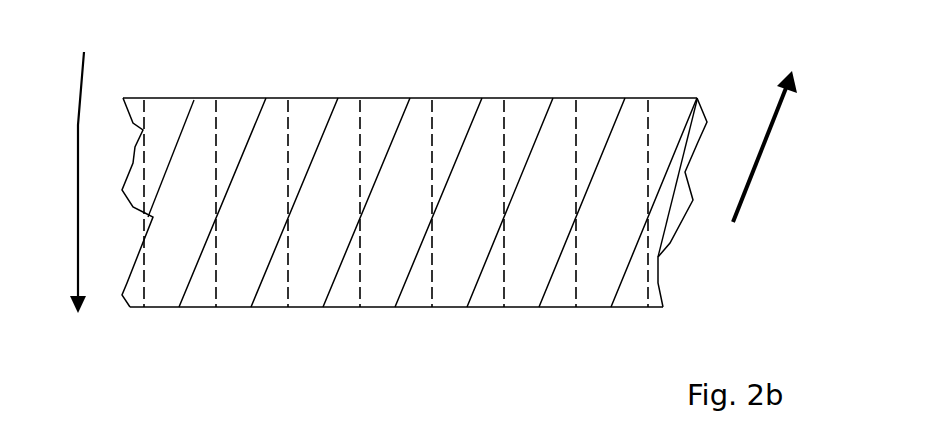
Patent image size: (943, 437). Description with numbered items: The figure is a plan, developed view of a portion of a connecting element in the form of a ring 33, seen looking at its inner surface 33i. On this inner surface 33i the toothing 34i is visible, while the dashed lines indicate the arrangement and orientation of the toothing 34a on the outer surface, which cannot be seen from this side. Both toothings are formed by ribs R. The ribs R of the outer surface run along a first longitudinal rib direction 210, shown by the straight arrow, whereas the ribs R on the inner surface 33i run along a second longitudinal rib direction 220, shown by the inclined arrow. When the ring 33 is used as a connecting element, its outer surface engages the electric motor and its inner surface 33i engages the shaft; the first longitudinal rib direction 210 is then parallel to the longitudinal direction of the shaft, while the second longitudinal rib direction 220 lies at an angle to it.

The first longitudinal rib direction 210 is at (94, 169).
The second longitudinal rib direction 220 is at (770, 128).
The rib R is at (197, 163).
The toothing on the inner surface 34i is at (320, 133).
The toothing on the outer surface 34a is at (433, 130).
The inner surface 33i is at (232, 246).
The ring 33 is at (668, 255).